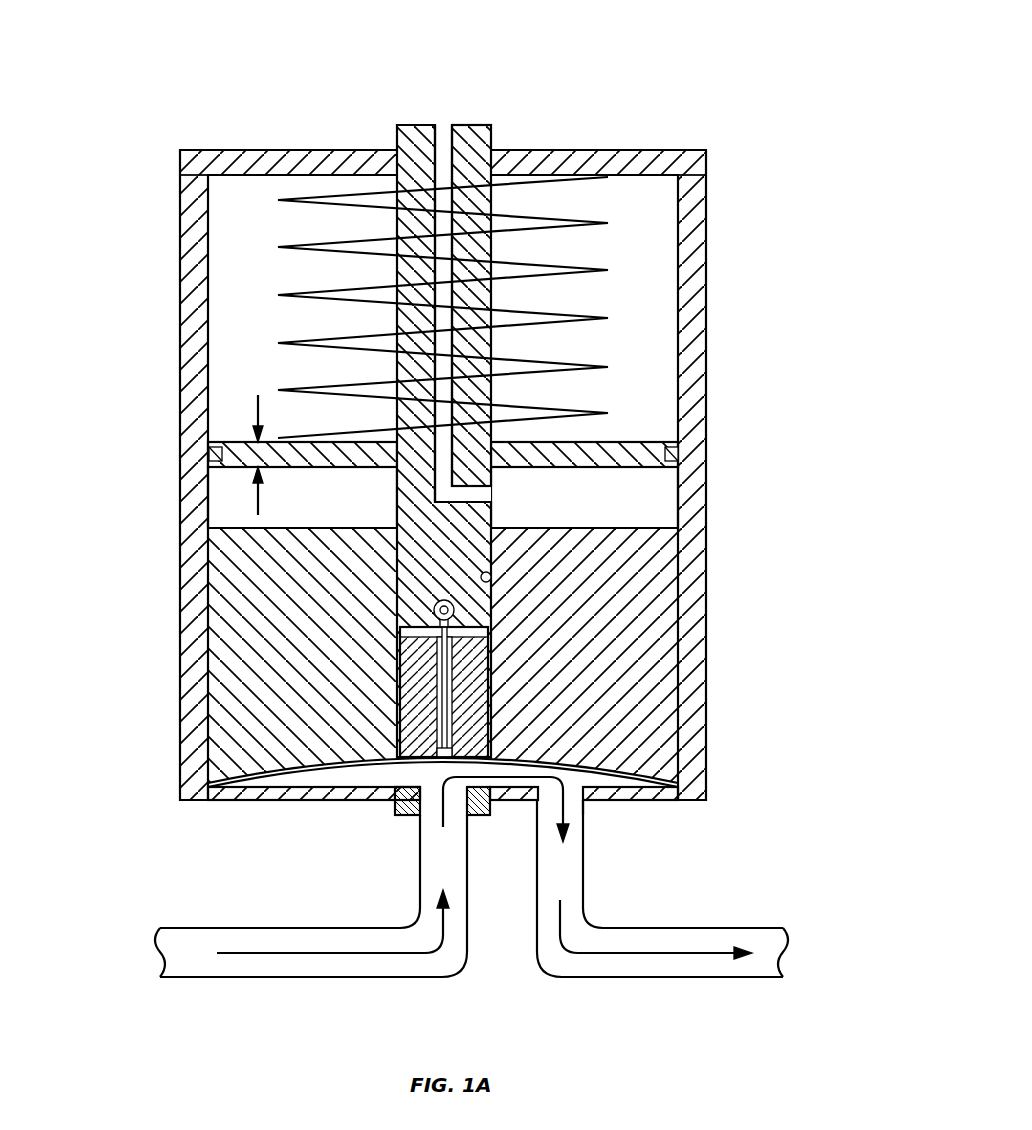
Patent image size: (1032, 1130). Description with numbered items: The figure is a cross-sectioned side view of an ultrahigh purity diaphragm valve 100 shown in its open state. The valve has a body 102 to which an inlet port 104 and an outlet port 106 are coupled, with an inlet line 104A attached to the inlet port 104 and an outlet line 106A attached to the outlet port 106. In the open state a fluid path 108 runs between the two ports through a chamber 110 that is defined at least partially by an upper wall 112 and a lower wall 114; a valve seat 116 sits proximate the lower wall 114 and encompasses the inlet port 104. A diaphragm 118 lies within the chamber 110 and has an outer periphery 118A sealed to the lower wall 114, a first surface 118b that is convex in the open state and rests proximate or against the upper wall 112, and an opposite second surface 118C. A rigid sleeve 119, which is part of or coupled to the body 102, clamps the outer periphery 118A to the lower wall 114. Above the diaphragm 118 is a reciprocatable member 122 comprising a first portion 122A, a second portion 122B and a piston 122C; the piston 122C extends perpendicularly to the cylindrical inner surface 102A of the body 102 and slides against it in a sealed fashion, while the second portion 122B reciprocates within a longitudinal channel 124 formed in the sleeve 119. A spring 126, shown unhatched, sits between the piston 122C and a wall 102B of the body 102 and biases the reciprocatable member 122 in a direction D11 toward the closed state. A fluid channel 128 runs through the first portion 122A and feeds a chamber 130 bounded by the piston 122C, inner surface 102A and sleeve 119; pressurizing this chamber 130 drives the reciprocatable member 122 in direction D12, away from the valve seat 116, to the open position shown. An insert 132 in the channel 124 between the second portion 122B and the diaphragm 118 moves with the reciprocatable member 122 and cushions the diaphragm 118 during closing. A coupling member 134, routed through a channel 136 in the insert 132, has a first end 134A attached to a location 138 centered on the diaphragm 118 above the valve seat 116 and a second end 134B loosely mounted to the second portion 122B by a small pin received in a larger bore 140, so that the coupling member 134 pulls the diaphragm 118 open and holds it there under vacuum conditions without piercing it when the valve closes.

The diaphragm valve 100 is at (652, 68).
The body 102 is at (493, 475).
The inner surface 102A is at (208, 255).
The wall 102B is at (300, 178).
The inlet port 104 is at (433, 840).
The inlet line 104A is at (150, 956).
The outlet port 106 is at (562, 850).
The outlet line 106A is at (800, 956).
The fluid path 108 is at (583, 806).
The chamber 110 is at (347, 786).
The upper wall 112 is at (389, 658).
The lower wall 114 is at (368, 788).
The valve seat 116 is at (490, 808).
The diaphragm 118 is at (425, 757).
The outer periphery 118A is at (229, 812).
The first surface 118b is at (260, 783).
The second surface 118C is at (335, 790).
The sleeve 119 is at (208, 620).
The reciprocatable member 122 is at (437, 400).
The first portion 122A is at (397, 138).
The second portion 122B is at (397, 578).
The piston 122C is at (666, 447).
The channel 124 is at (492, 577).
The spring 126 is at (573, 277).
The fluid channel 128 is at (447, 105).
The chamber 130 is at (443, 497).
The insert 132 is at (400, 642).
The coupling member 134 is at (448, 672).
The first end 134A is at (490, 727).
The second end 134B is at (490, 627).
The channel 136 is at (440, 692).
The location 138 is at (437, 752).
The bore 140 is at (434, 610).
The direction D11 is at (258, 400).
The direction D12 is at (258, 497).